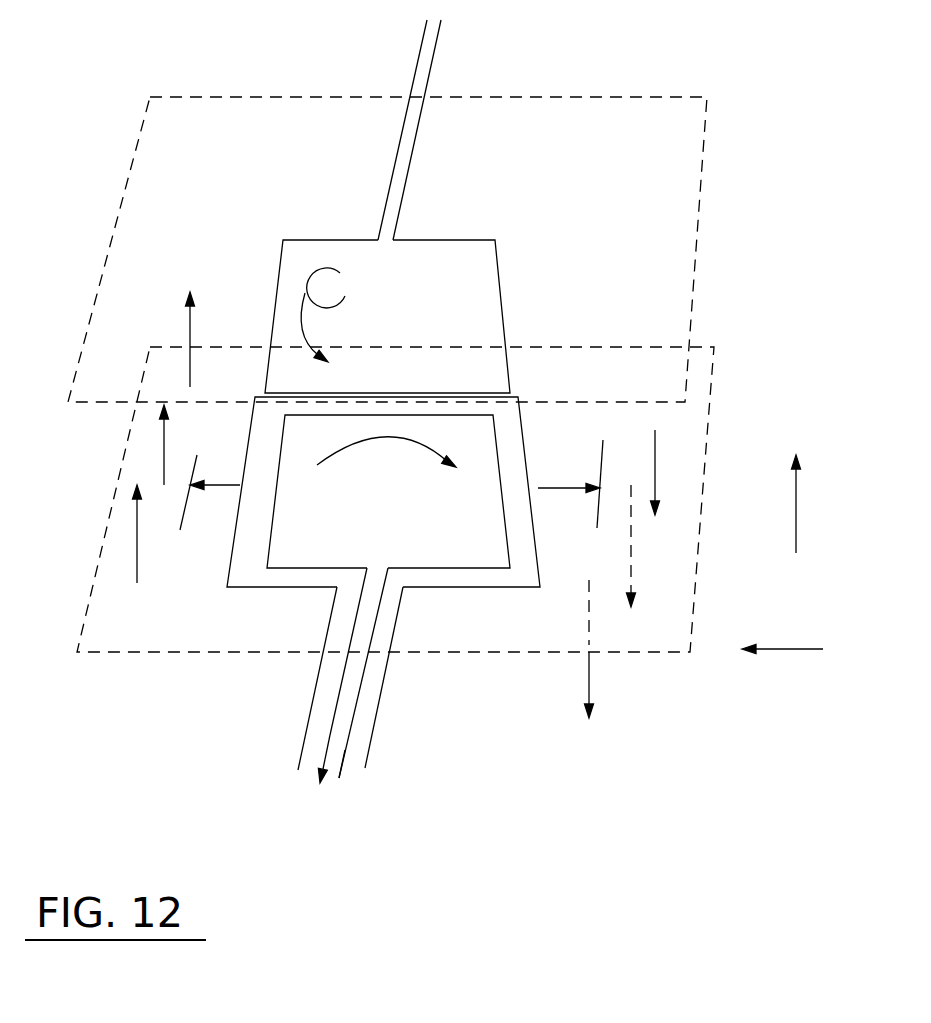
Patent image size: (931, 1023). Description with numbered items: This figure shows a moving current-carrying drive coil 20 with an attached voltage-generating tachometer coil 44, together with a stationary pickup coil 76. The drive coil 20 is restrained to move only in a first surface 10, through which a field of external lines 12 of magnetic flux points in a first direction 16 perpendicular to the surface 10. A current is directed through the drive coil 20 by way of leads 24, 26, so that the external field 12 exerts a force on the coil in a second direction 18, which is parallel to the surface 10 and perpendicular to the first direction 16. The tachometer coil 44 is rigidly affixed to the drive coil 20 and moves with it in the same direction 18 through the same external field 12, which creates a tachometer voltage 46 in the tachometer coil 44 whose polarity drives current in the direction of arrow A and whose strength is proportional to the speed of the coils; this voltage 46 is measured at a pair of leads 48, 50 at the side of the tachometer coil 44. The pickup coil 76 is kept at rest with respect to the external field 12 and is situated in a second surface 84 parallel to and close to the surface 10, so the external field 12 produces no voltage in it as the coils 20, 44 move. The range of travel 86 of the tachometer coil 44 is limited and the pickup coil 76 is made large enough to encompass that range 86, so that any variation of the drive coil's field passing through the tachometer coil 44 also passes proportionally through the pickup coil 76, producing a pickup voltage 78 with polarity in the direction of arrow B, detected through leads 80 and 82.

The first surface 10 is at (90, 578).
The external lines of magnetic flux 12 is at (155, 449).
The first direction 16 is at (797, 513).
The second direction 18 is at (797, 650).
The drive coil 20 is at (232, 540).
The lead 24 is at (317, 680).
The lead 26 is at (382, 697).
The tachometer coil 44 is at (278, 455).
The tachometer voltage 46 is at (397, 442).
The lead 48 is at (328, 743).
The lead 50 is at (343, 742).
The pickup coil 76 is at (273, 315).
The pickup voltage 78 is at (336, 315).
The lead 80 is at (392, 178).
The lead 82 is at (417, 182).
The second surface 84 is at (662, 272).
The range of travel 86 is at (233, 483).